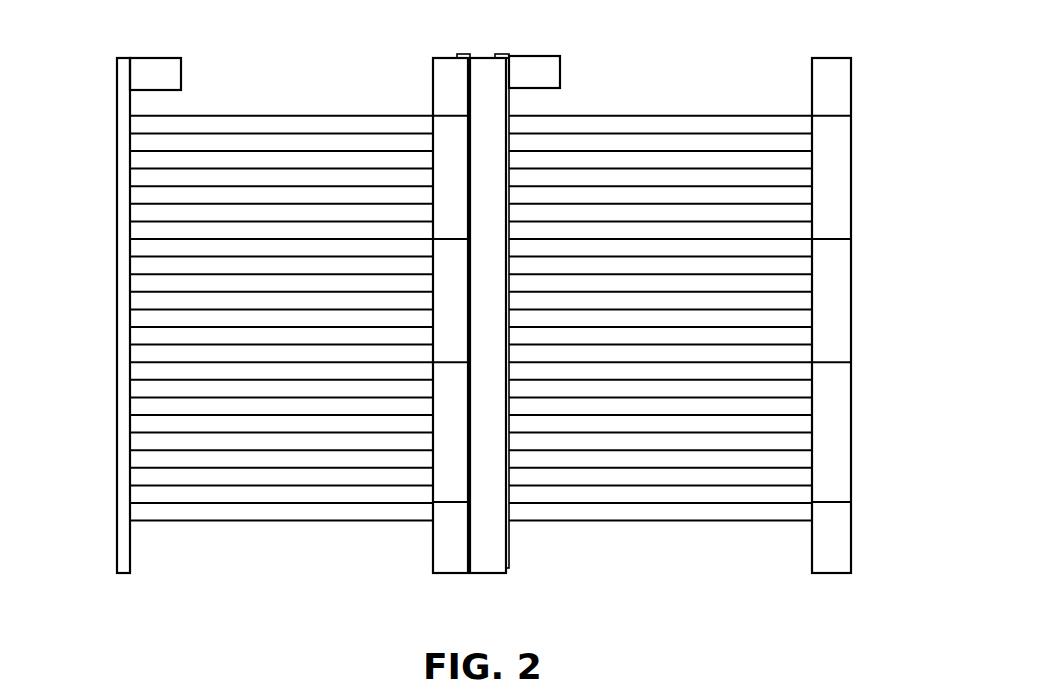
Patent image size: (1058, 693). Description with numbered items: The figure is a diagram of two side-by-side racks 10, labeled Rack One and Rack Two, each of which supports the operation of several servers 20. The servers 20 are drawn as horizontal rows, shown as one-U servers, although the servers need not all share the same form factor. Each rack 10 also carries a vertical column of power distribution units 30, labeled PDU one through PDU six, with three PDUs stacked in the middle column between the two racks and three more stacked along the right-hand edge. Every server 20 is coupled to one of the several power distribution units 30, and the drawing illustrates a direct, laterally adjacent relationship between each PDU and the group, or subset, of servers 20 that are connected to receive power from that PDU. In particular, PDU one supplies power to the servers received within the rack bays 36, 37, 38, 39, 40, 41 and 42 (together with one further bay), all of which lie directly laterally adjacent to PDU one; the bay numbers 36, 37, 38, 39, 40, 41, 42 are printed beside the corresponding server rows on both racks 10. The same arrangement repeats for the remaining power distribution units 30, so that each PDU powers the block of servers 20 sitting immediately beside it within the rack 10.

The rack 10 is at (106, 55).
The server 20 is at (229, 125).
The power distribution unit 30 is at (441, 121).
The rack bay 36 is at (471, 230).
The rack bay 37 is at (471, 213).
The rack bay 38 is at (471, 195).
The rack bay 39 is at (471, 178).
The rack bay 40 is at (471, 160).
The rack bay 41 is at (471, 142).
The rack bay 42 is at (471, 125).